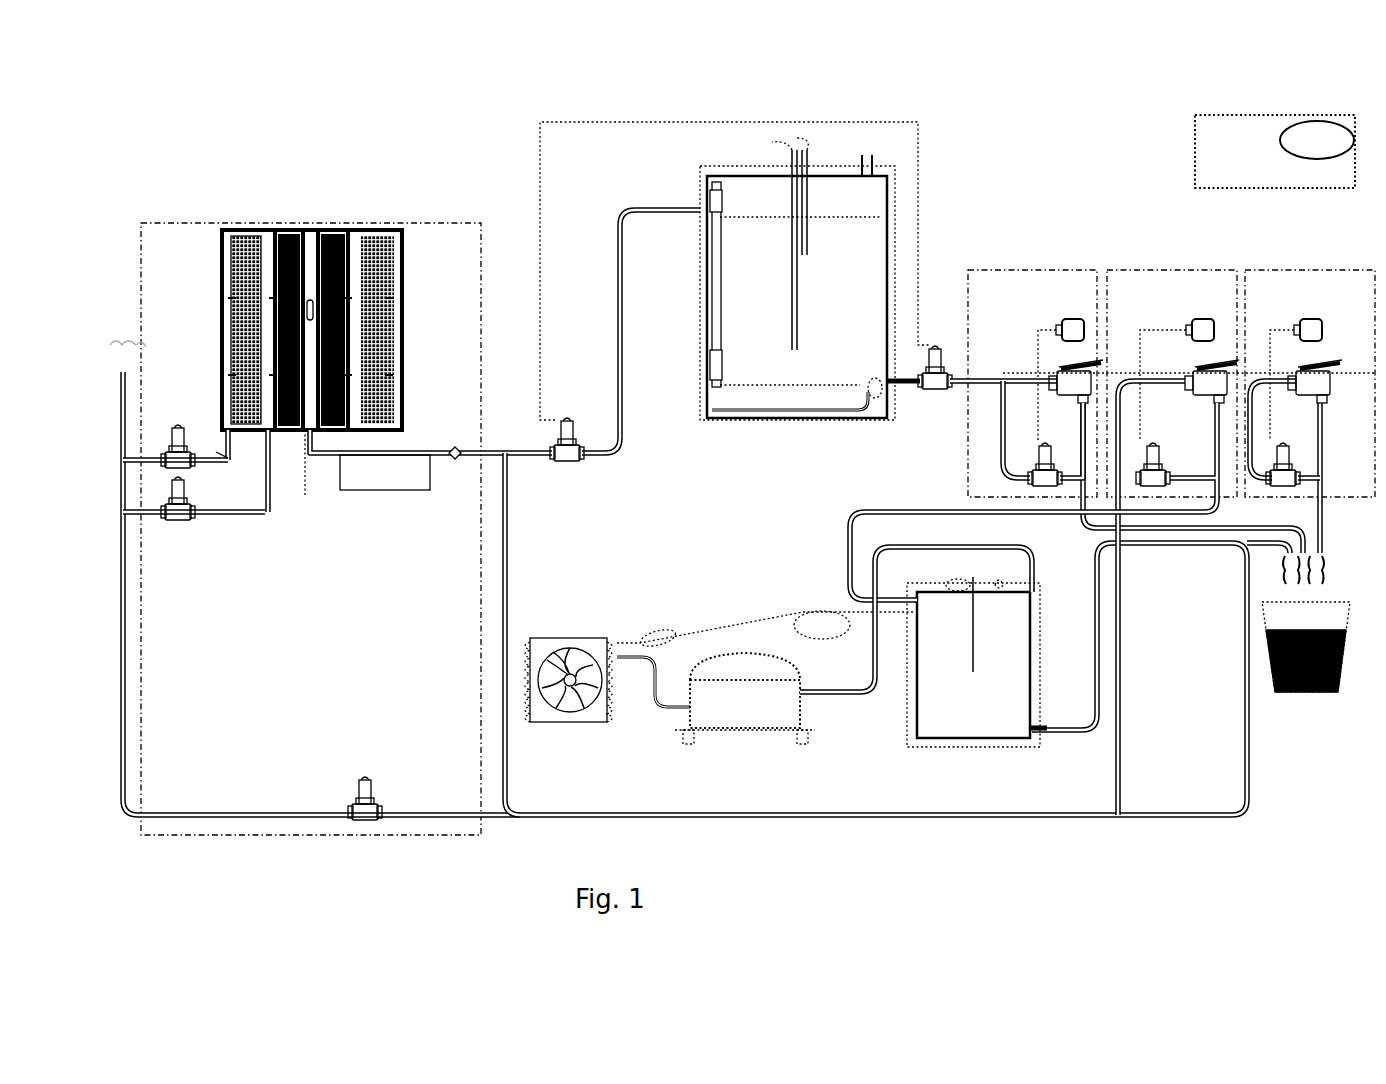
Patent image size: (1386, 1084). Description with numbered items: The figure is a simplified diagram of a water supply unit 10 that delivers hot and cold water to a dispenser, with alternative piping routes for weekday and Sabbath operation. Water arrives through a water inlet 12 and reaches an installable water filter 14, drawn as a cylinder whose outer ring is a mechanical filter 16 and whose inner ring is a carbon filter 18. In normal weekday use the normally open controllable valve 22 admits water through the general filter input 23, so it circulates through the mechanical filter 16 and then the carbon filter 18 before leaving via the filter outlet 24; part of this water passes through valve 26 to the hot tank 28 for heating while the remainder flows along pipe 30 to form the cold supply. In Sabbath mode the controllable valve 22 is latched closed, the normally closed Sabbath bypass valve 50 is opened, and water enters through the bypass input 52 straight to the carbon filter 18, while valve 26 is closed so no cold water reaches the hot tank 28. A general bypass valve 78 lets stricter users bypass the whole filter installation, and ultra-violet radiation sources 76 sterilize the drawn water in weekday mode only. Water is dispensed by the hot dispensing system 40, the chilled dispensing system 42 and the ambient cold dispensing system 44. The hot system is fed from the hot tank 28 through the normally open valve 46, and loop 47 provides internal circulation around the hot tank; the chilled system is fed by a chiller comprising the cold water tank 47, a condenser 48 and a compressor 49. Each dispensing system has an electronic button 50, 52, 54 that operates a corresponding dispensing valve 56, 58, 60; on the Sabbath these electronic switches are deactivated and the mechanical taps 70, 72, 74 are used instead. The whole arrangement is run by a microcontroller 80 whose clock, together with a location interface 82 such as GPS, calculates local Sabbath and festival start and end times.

The water supply unit 10 is at (240, 217).
The water inlet 12 is at (115, 433).
The installable water filter 14 is at (400, 253).
The mechanical filter 16 is at (228, 340).
The carbon filter 18 is at (325, 263).
The controllable valve 22 is at (178, 445).
The general filter input 23 is at (218, 453).
The filter outlet 24 is at (321, 493).
The valve 26 is at (572, 480).
The hot tank 28 is at (878, 210).
The pipe 30 is at (500, 617).
The hot dispensing system 40 is at (1052, 303).
The chilled dispensing system 42 is at (1193, 303).
The ambient cold dispensing system 44 is at (1310, 303).
The valve 46 is at (923, 390).
The loop / cold water tank 47 is at (858, 128).
The condenser 48 is at (577, 652).
The compressor 49 is at (733, 733).
The electronic button / Sabbath bypass valve 50 is at (180, 530).
The electronic button / bypass input 52 is at (270, 463).
The electronic button 54 is at (1290, 355).
The dispensing valve 56 is at (1040, 470).
The dispensing valve 58 is at (1150, 470).
The dispensing valve 60 is at (1283, 470).
The mechanical tap 70 is at (1057, 393).
The mechanical tap 72 is at (1195, 403).
The mechanical tap 74 is at (1310, 405).
The ultra-violet radiation sources 76 is at (397, 478).
The general bypass valve 78 is at (353, 793).
The microcontroller 80 is at (1222, 168).
The location interface 82 is at (1288, 135).